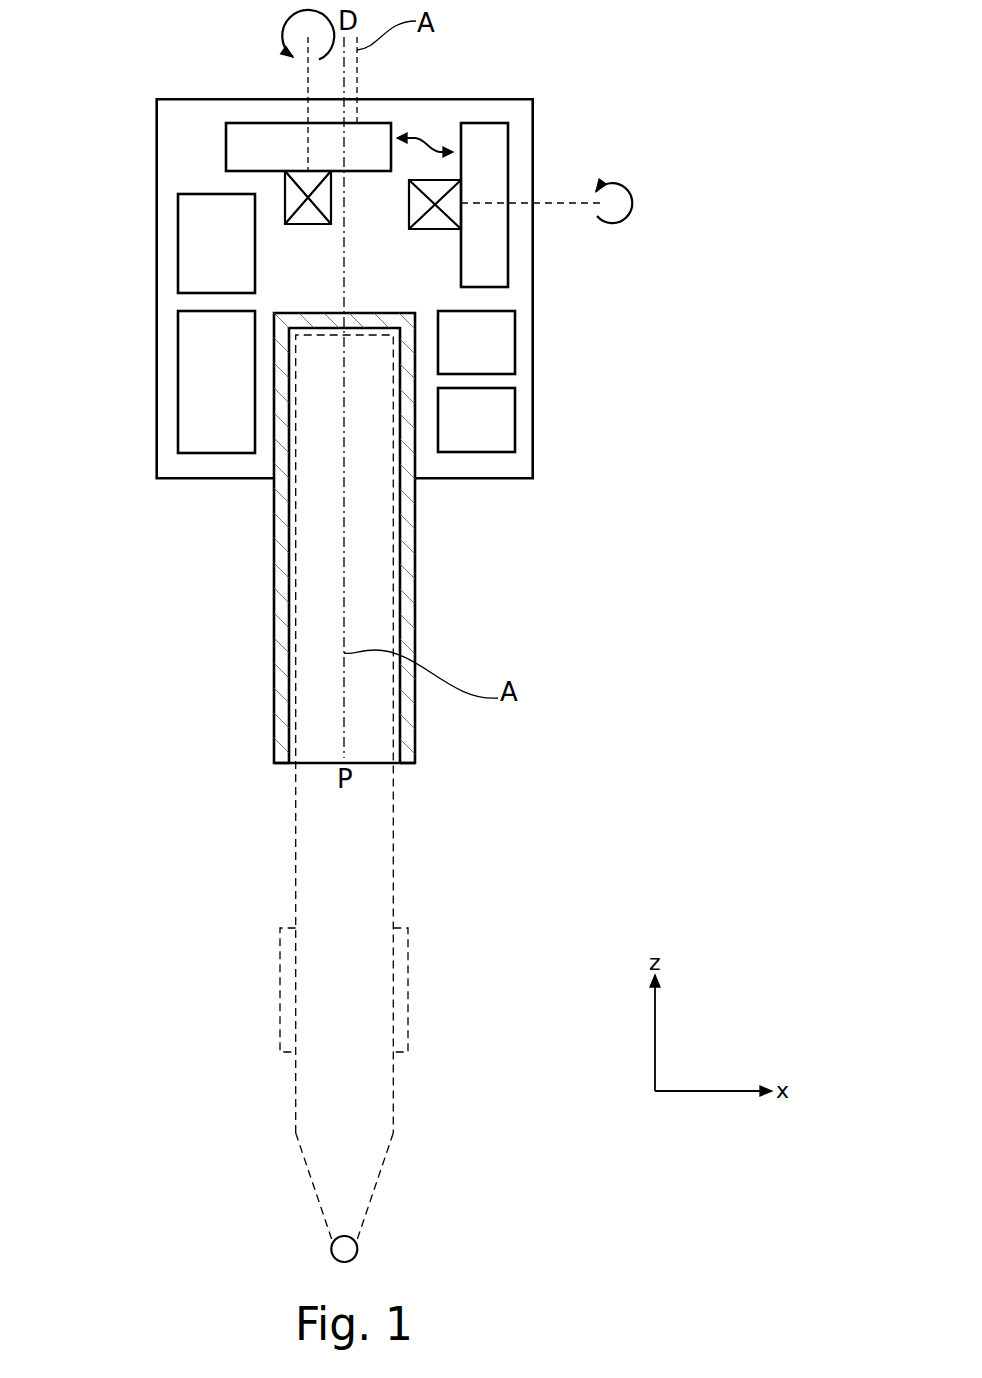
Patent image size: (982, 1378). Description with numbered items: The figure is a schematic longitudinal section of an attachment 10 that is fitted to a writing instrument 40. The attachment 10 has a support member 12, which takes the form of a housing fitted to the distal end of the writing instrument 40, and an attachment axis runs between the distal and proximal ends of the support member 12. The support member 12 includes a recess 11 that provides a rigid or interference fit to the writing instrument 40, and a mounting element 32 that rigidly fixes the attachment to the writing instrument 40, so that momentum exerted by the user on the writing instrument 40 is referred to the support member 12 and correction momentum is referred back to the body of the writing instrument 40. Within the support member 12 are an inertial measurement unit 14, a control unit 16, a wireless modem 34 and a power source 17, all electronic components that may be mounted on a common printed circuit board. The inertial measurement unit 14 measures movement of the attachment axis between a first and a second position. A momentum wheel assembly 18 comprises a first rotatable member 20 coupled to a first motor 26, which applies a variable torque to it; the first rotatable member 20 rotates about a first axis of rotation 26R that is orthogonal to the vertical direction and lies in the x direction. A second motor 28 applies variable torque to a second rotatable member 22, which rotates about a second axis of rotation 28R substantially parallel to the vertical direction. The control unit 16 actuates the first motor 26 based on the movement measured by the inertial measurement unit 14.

The attachment 10 is at (713, 366).
The recess 11 is at (362, 439).
The support member 12 is at (533, 111).
The inertial measurement unit 14 is at (186, 248).
The control unit 16 is at (189, 383).
The power source 17 is at (515, 421).
The momentum wheel assembly 18 is at (420, 136).
The first rotatable member 20 is at (508, 160).
The second rotatable member 22 is at (243, 145).
The first motor 26 is at (432, 229).
The first axis of rotation 26R is at (573, 207).
The second motor 28 is at (287, 190).
The second axis of rotation 28R is at (307, 68).
The mounting element 32 is at (415, 586).
The wireless modem 34 is at (515, 350).
The writing instrument 40 is at (393, 872).